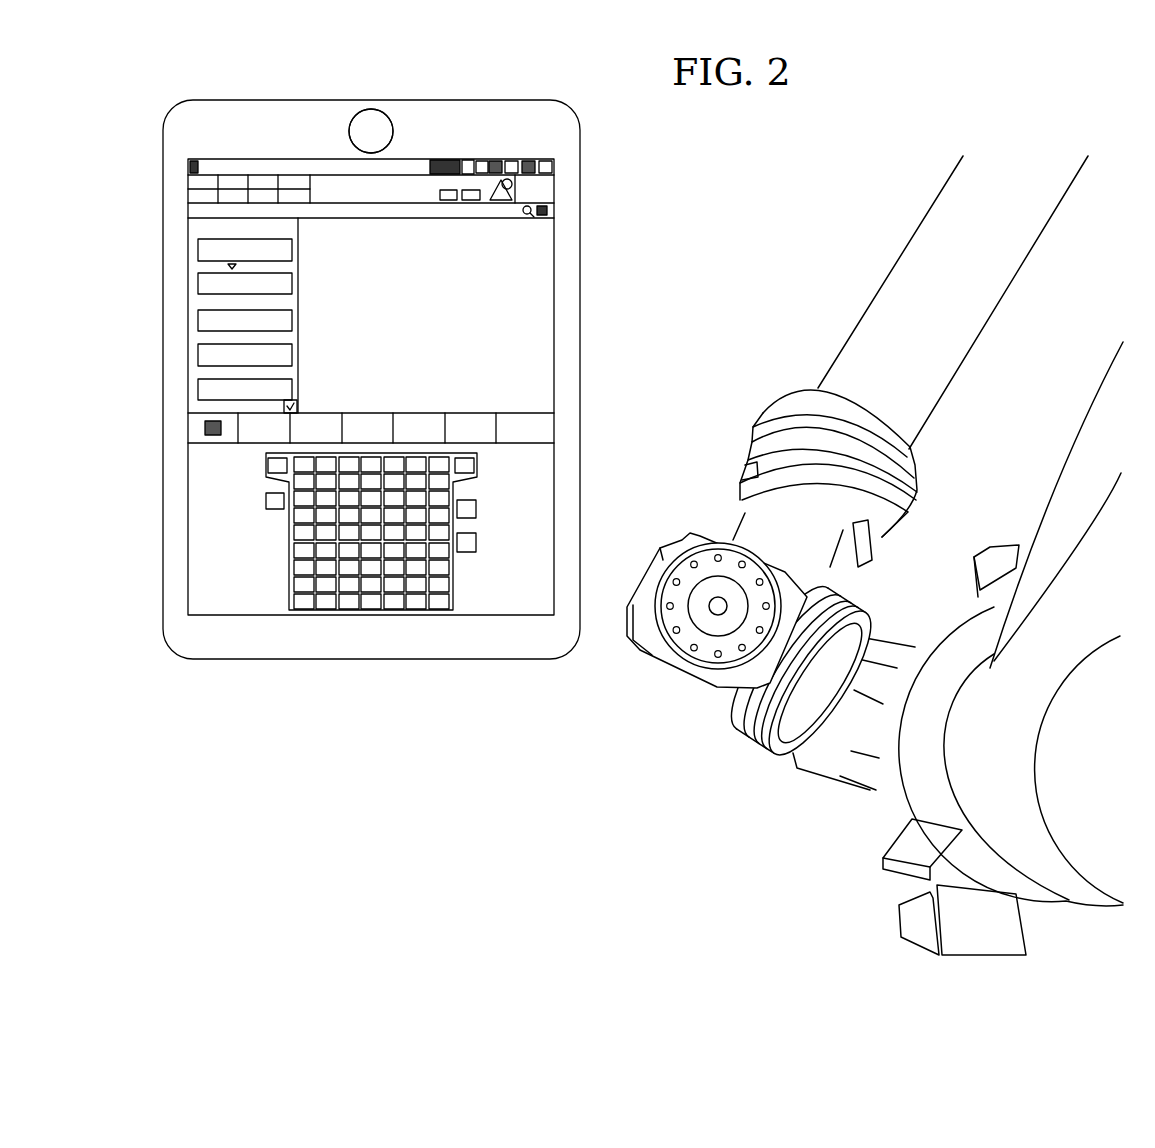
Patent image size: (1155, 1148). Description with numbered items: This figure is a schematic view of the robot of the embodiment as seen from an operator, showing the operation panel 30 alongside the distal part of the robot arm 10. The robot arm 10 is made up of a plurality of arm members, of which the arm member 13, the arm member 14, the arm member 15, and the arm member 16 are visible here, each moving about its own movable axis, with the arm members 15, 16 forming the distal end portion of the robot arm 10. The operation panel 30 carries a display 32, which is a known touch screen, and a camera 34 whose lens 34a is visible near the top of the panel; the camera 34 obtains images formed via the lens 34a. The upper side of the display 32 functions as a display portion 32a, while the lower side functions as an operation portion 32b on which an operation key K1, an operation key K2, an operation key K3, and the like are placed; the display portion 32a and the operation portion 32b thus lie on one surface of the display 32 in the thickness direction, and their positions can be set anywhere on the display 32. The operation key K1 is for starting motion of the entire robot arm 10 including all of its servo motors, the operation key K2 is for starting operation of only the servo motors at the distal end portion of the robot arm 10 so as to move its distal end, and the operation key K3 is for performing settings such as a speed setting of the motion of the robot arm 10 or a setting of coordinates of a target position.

The robot arm 10 is at (935, 196).
The arm member 13 is at (877, 297).
The arm member 14 is at (822, 580).
The arm member 15 is at (636, 650).
The arm member 16 is at (707, 645).
The operation panel 30 is at (580, 158).
The display 32 is at (555, 285).
The display portion 32a is at (152, 161).
The operation portion 32b is at (152, 447).
The camera 34 is at (392, 123).
The lens 34a is at (365, 130).
The operation key K1 is at (477, 542).
The operation key K2 is at (477, 507).
The operation key K3 is at (452, 580).